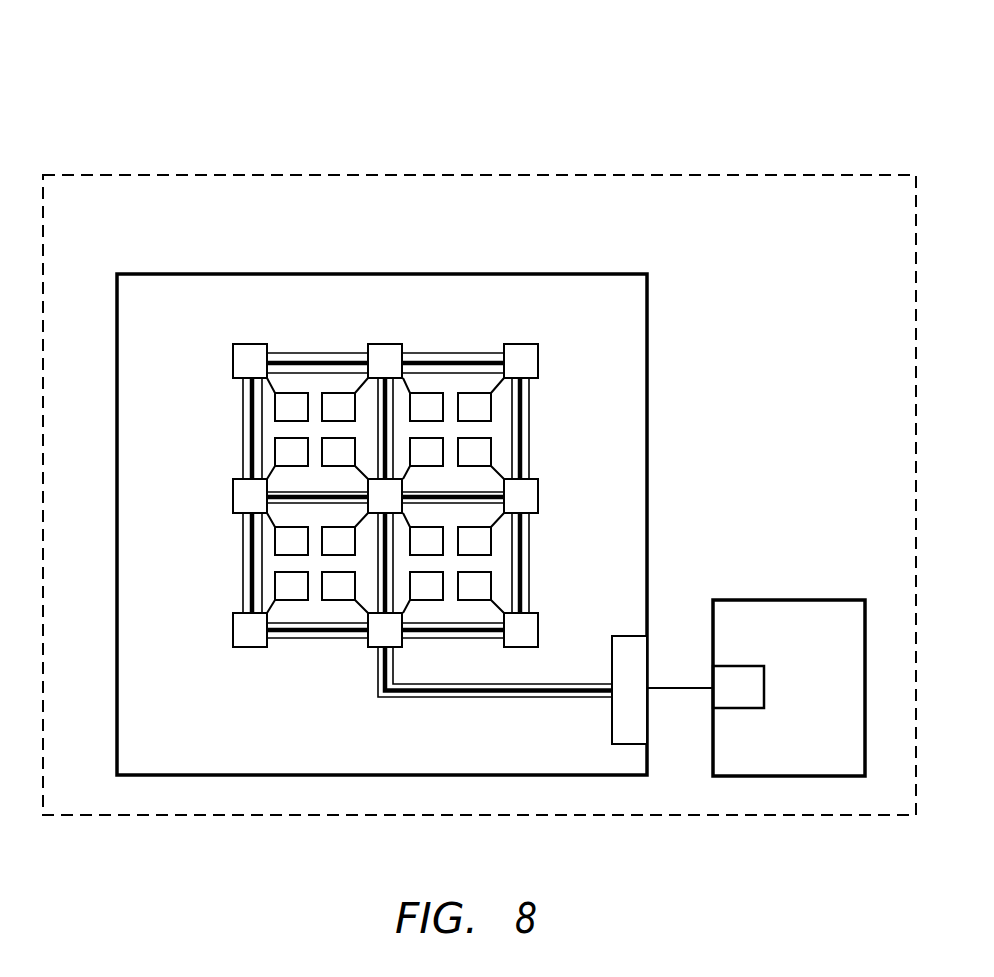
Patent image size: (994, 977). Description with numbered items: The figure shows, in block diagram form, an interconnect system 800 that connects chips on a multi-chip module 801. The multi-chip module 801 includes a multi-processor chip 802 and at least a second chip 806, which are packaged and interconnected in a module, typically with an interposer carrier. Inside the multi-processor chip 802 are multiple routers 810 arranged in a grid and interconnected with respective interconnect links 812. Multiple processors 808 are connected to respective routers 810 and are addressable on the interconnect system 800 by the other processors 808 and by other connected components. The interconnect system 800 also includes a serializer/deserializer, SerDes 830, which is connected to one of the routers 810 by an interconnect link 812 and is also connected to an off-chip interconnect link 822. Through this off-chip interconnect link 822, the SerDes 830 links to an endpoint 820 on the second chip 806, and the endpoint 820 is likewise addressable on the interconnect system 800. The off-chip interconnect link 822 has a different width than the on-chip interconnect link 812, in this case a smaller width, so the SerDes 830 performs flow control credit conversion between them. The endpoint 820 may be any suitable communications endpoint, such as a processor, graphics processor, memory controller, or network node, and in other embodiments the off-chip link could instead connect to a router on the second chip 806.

The interconnect system 800 is at (116, 52).
The multi-chip module 801 is at (163, 175).
The multi-processor chip 802 is at (178, 273).
The second chip 806 is at (817, 600).
The processor 808 is at (275, 408).
The router 810 is at (233, 373).
The interconnect link 812 is at (336, 640).
The endpoint 820 is at (745, 708).
The off-chip interconnect link 822 is at (693, 687).
The serializer/deserializer (SerDes) 830 is at (630, 636).